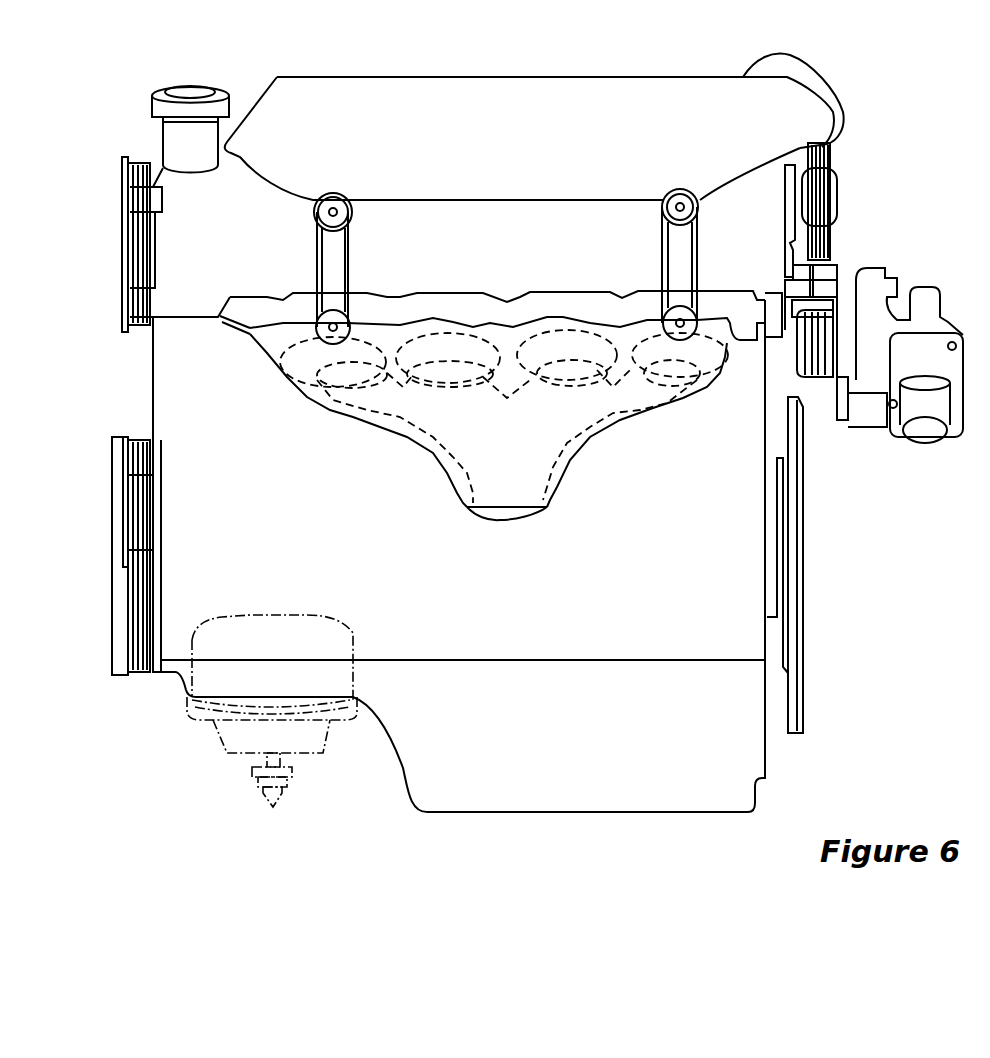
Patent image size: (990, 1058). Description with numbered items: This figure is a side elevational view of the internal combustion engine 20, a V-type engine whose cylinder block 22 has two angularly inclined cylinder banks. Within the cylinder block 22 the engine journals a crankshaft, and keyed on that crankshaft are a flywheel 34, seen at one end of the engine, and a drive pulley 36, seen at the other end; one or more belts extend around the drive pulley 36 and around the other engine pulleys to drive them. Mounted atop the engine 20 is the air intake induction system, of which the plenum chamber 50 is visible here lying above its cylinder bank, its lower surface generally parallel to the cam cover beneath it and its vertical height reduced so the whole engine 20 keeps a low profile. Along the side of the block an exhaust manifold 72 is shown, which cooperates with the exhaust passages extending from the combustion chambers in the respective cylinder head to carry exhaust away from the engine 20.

The internal combustion engine 20 is at (920, 144).
The cylinder block 22 is at (150, 418).
The flywheel 34 is at (792, 734).
The drive pulley 36 is at (121, 676).
The plenum chamber 50 is at (477, 68).
The exhaust manifold 72 is at (573, 460).